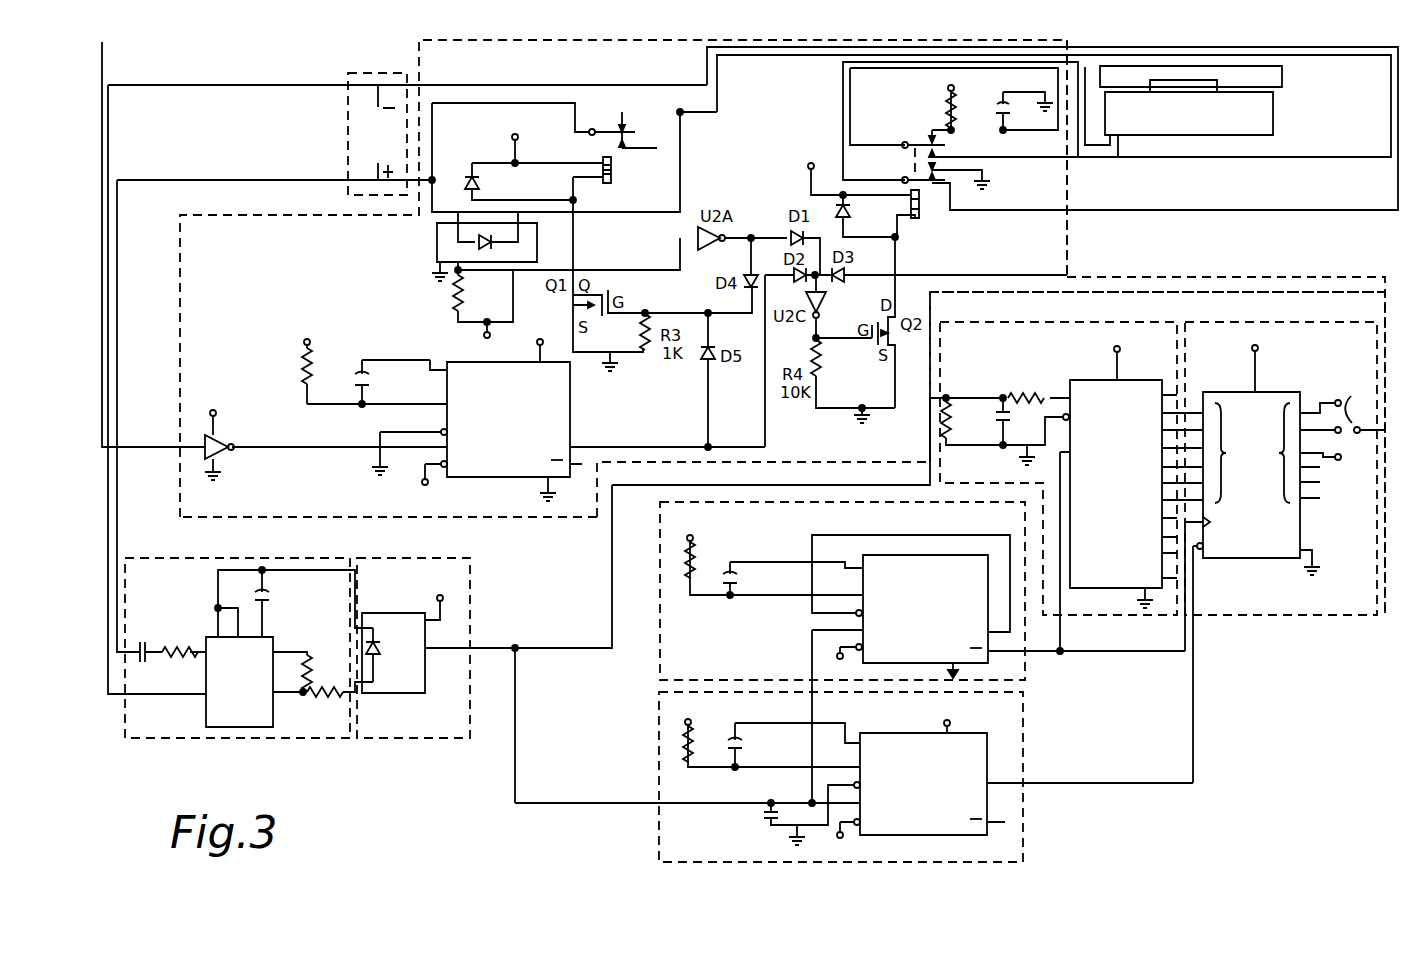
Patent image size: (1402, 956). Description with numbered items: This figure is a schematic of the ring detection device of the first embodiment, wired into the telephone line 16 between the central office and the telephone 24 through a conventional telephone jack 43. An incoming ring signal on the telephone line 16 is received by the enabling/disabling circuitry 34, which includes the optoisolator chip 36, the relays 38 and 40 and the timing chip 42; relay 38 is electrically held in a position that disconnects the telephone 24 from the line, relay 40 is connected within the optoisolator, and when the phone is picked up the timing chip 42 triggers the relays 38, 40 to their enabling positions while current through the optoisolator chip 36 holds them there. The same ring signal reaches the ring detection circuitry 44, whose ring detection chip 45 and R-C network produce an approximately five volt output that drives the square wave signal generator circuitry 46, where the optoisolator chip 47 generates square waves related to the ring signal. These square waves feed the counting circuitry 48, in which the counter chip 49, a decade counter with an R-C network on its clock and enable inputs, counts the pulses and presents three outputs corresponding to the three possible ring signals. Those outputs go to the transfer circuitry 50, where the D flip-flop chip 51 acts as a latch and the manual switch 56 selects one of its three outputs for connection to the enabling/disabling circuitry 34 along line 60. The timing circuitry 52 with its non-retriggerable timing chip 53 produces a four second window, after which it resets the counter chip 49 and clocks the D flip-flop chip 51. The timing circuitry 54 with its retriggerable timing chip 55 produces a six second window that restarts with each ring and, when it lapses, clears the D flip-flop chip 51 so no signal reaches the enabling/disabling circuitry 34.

The telephone line 16 is at (110, 318).
The telephone 24 is at (1273, 122).
The enabling/disabling circuitry 34 is at (1067, 237).
The optoisolator chip 36 is at (437, 258).
The relay 38 is at (915, 220).
The relay 40 is at (608, 187).
The timing chip 42 is at (575, 405).
The telephone jack 43 is at (352, 73).
The ring detection circuitry 44 is at (249, 674).
The ring detection chip 45 is at (206, 723).
The square wave signal generator circuitry 46 is at (484, 644).
The optoisolator chip 47 is at (372, 602).
The counting circuitry 48 is at (907, 470).
The counter chip 49 is at (1133, 378).
The transfer circuitry 50 is at (1285, 534).
The D flip-flop chip 51 is at (1270, 560).
The timing circuitry 52 is at (922, 652).
The timing chip 53 is at (935, 553).
The timing circuitry 54 is at (852, 753).
The timing chip 55 is at (932, 836).
The manual switch 56 is at (1344, 395).
The line 60 is at (1345, 292).